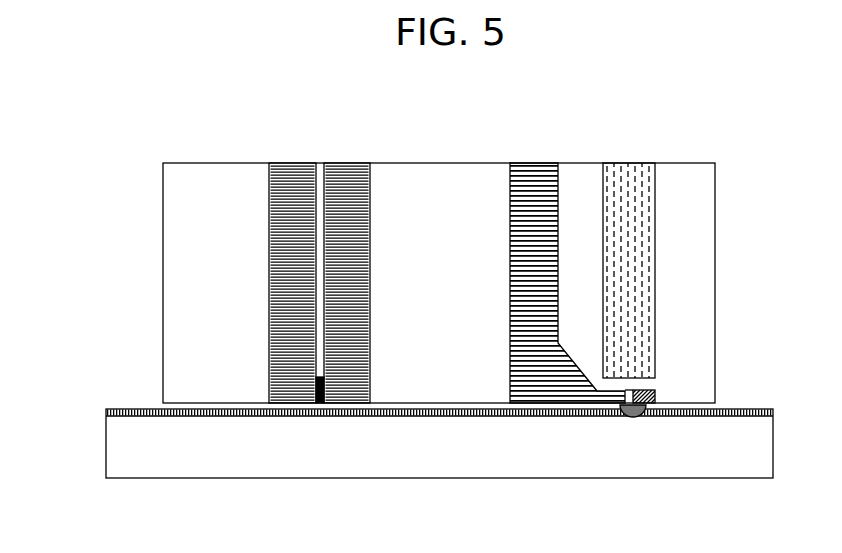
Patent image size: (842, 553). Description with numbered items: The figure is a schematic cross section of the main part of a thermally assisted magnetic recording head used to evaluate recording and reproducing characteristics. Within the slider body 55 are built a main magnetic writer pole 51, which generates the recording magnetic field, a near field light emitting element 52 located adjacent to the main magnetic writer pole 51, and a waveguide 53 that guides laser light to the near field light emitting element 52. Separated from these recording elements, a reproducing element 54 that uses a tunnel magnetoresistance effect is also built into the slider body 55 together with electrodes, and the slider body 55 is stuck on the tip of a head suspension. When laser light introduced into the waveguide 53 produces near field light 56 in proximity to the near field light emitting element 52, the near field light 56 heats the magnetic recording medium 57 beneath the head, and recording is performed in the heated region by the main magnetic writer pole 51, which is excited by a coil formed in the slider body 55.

The main magnetic writer pole 51 is at (558, 207).
The near field light emitting element 52 is at (655, 396).
The waveguide 53 is at (655, 277).
The reproducing element 54 is at (297, 383).
The slider body 55 is at (163, 273).
The near field light 56 is at (633, 418).
The magnetic recording medium 57 is at (118, 450).